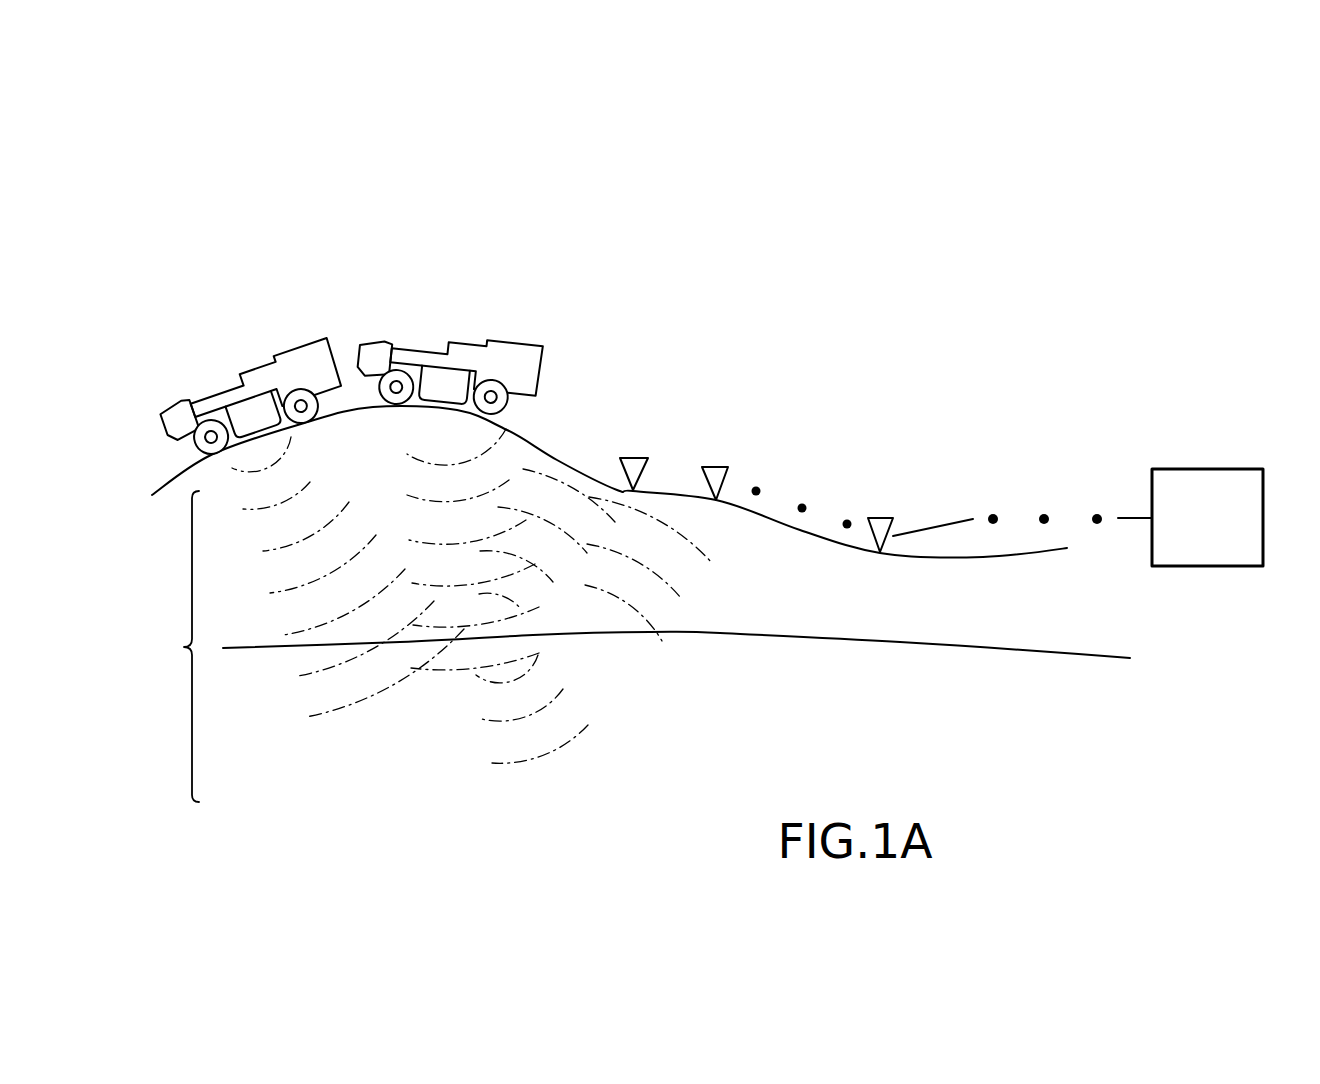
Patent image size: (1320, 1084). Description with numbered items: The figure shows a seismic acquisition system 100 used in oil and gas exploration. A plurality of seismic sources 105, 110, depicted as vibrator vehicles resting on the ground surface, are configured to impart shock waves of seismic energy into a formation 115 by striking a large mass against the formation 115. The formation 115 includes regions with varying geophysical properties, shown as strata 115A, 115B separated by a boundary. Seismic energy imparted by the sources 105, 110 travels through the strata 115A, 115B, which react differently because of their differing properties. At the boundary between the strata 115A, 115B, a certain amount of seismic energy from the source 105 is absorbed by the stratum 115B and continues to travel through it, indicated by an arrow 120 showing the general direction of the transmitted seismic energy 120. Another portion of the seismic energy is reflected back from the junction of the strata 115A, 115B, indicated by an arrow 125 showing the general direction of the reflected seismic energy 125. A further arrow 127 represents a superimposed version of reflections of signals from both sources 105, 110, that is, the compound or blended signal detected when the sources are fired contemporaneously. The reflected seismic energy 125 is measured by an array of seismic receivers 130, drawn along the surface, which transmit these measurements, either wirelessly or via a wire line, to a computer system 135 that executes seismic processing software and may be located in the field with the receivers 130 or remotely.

The seismic acquisition system 100 is at (206, 205).
The seismic source 105 is at (474, 392).
The seismic source 110 is at (267, 424).
The formation 115 is at (161, 646).
The stratum 115A is at (343, 638).
The stratum 115B is at (374, 697).
The transmitted seismic energy 120 is at (503, 658).
The reflected seismic energy 125 is at (565, 633).
The blended signal 127 is at (487, 637).
The seismic receivers 130 is at (605, 428).
The computer system 135 is at (1185, 533).